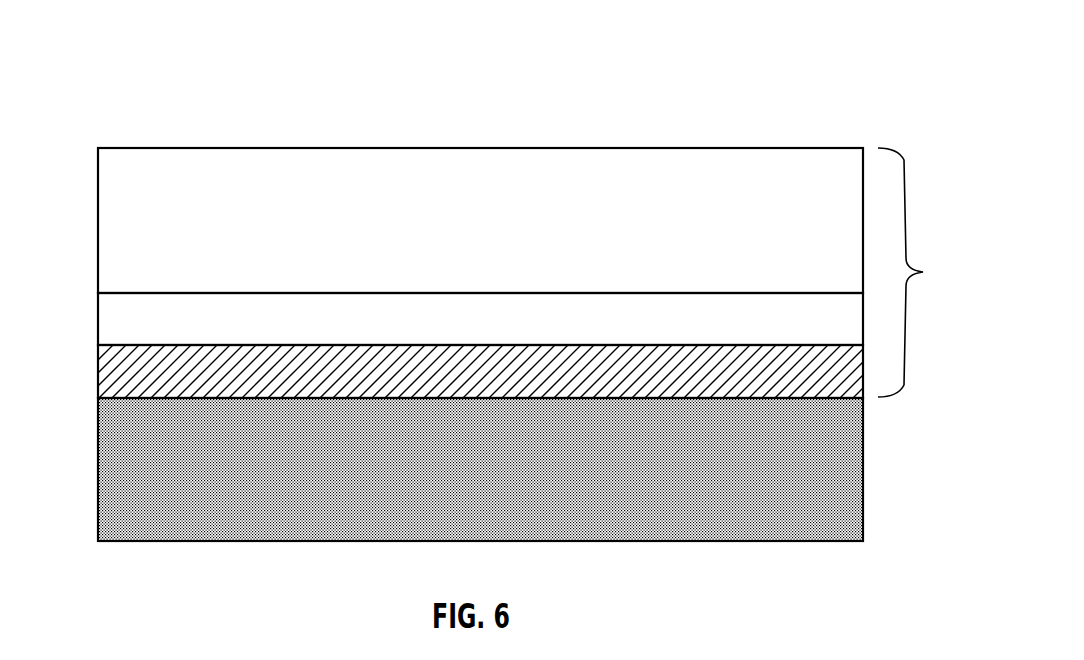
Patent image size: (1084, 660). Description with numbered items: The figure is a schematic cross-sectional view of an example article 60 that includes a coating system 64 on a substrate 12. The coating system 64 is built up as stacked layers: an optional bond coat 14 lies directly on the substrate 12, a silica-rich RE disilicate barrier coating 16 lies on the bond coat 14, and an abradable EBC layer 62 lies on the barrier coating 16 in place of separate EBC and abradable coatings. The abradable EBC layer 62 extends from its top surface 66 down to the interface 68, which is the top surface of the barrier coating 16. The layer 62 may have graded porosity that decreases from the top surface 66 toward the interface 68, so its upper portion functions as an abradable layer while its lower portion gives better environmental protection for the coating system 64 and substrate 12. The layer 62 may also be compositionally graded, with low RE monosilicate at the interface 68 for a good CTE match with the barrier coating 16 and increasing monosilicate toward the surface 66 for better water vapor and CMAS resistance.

The article 60 is at (775, 58).
The substrate 12 is at (98, 486).
The bond coat 14 is at (98, 372).
The silica-rich RE disilicate barrier coating 16 is at (98, 318).
The abradable EBC layer 62 is at (98, 218).
The coating system 64 is at (919, 272).
The top surface 66 is at (330, 148).
The interface 68 is at (365, 293).